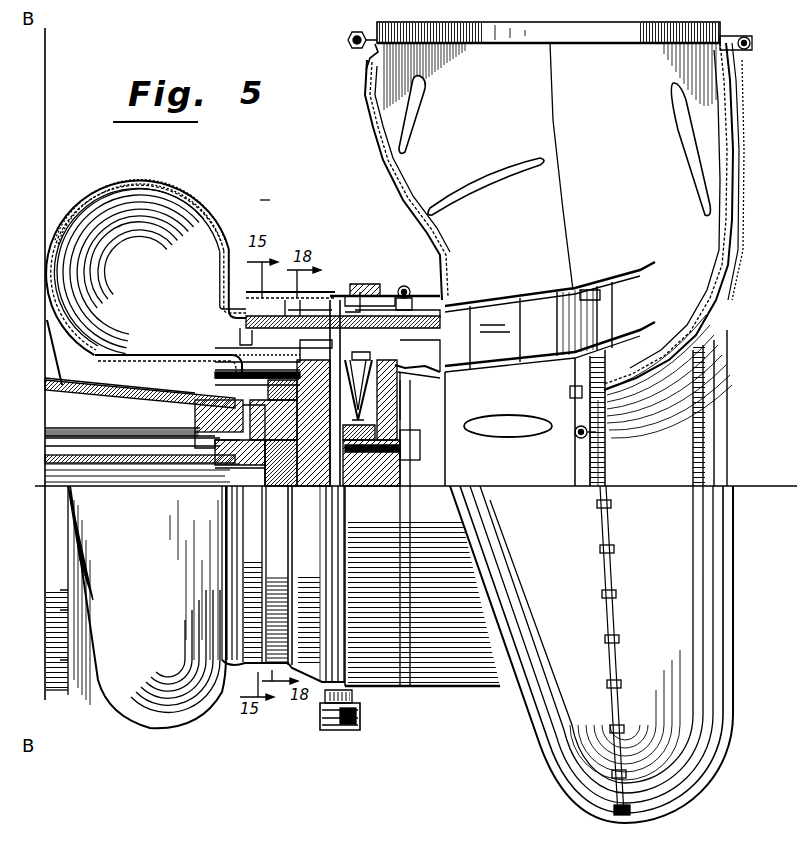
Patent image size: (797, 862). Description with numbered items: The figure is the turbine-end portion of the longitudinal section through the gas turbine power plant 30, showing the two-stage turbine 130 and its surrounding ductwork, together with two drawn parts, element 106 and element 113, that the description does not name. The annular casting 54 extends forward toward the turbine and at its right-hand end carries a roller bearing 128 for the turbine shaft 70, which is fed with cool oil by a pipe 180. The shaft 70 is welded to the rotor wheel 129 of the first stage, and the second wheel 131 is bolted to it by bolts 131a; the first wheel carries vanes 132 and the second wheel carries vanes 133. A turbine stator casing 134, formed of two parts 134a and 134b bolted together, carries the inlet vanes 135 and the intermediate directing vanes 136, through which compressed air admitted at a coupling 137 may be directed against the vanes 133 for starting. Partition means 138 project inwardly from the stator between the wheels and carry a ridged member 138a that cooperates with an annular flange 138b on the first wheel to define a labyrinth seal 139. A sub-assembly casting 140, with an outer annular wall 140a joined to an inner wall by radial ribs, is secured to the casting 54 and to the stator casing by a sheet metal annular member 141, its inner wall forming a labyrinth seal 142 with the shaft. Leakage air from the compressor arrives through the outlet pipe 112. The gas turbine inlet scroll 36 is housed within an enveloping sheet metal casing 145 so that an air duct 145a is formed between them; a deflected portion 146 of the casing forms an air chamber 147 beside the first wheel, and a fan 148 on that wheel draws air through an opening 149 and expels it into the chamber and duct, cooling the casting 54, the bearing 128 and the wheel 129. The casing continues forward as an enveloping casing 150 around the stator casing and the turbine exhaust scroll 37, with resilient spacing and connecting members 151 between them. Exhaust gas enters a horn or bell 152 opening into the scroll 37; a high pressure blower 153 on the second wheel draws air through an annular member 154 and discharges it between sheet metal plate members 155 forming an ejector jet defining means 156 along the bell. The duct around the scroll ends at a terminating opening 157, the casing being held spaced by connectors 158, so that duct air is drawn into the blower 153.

The gas turbine power plant 30 is at (268, 198).
The gas turbine inlet scroll 36 is at (203, 200).
The turbine exhaust scroll 37 is at (440, 236).
The annular casting 54 is at (95, 384).
The turbine shaft 70 is at (165, 470).
The bearing support 106 is at (289, 420).
The outlet pipe 112 is at (210, 360).
The spacer 113 is at (299, 394).
The roller bearing 128 is at (218, 470).
The rotor wheel of the first stage 129 is at (304, 490).
The turbine 130 is at (405, 348).
The second wheel of the second stage 131 is at (395, 485).
The bolts 131a is at (420, 450).
The vanes 132 is at (300, 306).
The vanes 133 is at (393, 398).
The turbine stator casing 134 is at (358, 290).
The stator casing part 134a is at (380, 252).
The stator casing part 134b is at (385, 262).
The inlet vanes 135 is at (232, 328).
The intermediate directing vanes 136 is at (375, 328).
The coupling 137 is at (370, 722).
The partition means 138 is at (375, 394).
The ridged member 138a is at (355, 350).
The annular flange 138b is at (350, 482).
The labyrinth seal 139 is at (374, 455).
The sub-assembly casting 140 is at (318, 393).
The outer annular wall 140a is at (315, 349).
The annular member 141 is at (257, 349).
The labyrinth seal 142 is at (240, 463).
The enveloping sheet metal casing 145 is at (163, 180).
The air duct 145a is at (110, 180).
The deflected portion 146 is at (215, 396).
The air chamber 147 is at (198, 412).
The fan 148 is at (282, 445).
The opening 149 is at (282, 490).
The enveloping casing 150 is at (408, 285).
The resilient spacing and connecting members 151 is at (726, 262).
The horn or bell 152 is at (592, 290).
The high pressure blower 153 is at (440, 418).
The annular member 154 is at (518, 476).
The sheet metal plate members 155 is at (398, 380).
The ejector jet defining means 156 is at (550, 325).
The terminating opening 157 is at (568, 397).
The connectors 158 is at (598, 434).
The pipe 180 is at (75, 445).